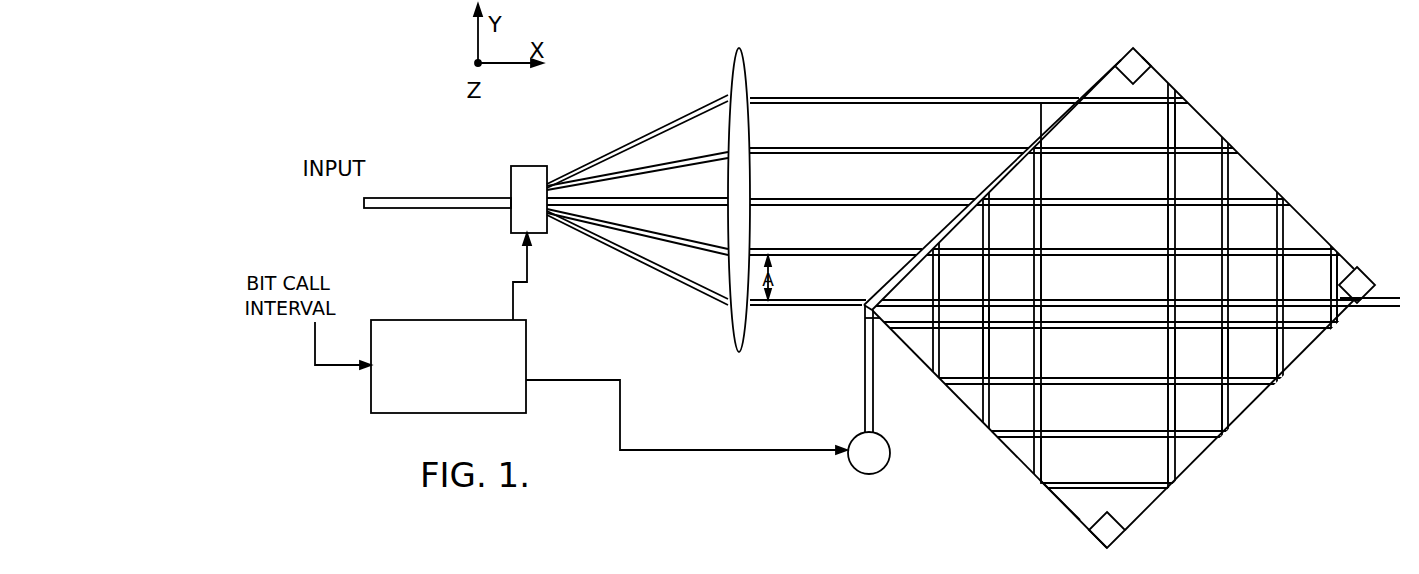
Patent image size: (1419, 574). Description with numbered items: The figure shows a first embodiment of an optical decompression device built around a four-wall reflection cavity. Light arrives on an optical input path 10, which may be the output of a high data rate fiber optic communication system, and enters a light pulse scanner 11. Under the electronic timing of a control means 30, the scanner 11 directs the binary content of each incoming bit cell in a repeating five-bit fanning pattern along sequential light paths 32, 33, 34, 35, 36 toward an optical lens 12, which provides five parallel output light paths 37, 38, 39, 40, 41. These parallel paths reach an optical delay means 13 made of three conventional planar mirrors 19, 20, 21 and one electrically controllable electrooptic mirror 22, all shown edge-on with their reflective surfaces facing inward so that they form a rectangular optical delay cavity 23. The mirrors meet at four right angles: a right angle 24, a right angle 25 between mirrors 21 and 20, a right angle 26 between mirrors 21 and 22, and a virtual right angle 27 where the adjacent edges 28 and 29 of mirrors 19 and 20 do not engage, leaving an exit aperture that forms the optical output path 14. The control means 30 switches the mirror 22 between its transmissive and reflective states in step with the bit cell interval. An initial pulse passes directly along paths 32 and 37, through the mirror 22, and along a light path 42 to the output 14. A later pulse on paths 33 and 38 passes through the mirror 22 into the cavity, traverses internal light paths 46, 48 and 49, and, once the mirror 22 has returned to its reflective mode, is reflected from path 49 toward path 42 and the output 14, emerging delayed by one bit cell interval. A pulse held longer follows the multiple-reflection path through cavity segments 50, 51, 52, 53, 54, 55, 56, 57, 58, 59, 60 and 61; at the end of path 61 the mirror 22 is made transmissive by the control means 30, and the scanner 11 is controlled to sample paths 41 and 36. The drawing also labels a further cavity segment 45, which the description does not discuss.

The input path 10 is at (443, 198).
The light pulse scanner 11 is at (527, 166).
The optical lens 12 is at (733, 325).
The optical delay means 13 is at (1103, 282).
The output path 14 is at (804, 307).
The planar mirror 19 is at (1249, 161).
The planar mirror 20 is at (1198, 471).
The planar mirror 21 is at (1061, 509).
The electrically controllable planar mirror 22 is at (996, 181).
The optical delay cavity 23 is at (1058, 353).
The right angle 24 is at (1116, 62).
The right angle 25 is at (1132, 523).
The right angle 26 is at (910, 335).
The virtual right angle 27 is at (1364, 276).
The adjacent edge 28 is at (1343, 268).
The adjacent edge 29 is at (1353, 318).
The control means 30 is at (452, 320).
The light path 32 is at (637, 266).
The light path 33 is at (663, 237).
The light path 34 is at (665, 198).
The light path 35 is at (697, 153).
The light path 36 is at (628, 140).
The output light path 37 is at (850, 300).
The output light path 38 is at (876, 250).
The output light path 39 is at (815, 200).
The output light path 40 is at (815, 149).
The output light path 41 is at (808, 99).
The light path 42 is at (1325, 270).
The crystal cell 45 is at (1089, 299).
The light path 46 is at (1108, 254).
The light path 48 is at (1117, 324).
The light path 49 is at (877, 318).
The light path 50 is at (934, 290).
The light path 51 is at (1105, 378).
The light path 52 is at (1267, 353).
The light path 53 is at (1152, 198).
The light path 54 is at (982, 348).
The light path 55 is at (1152, 430).
The light path 56 is at (1218, 360).
The light path 57 is at (1106, 153).
The light path 58 is at (1045, 182).
The light path 59 is at (1122, 482).
The light path 60 is at (1183, 408).
The light path 61 is at (1162, 110).